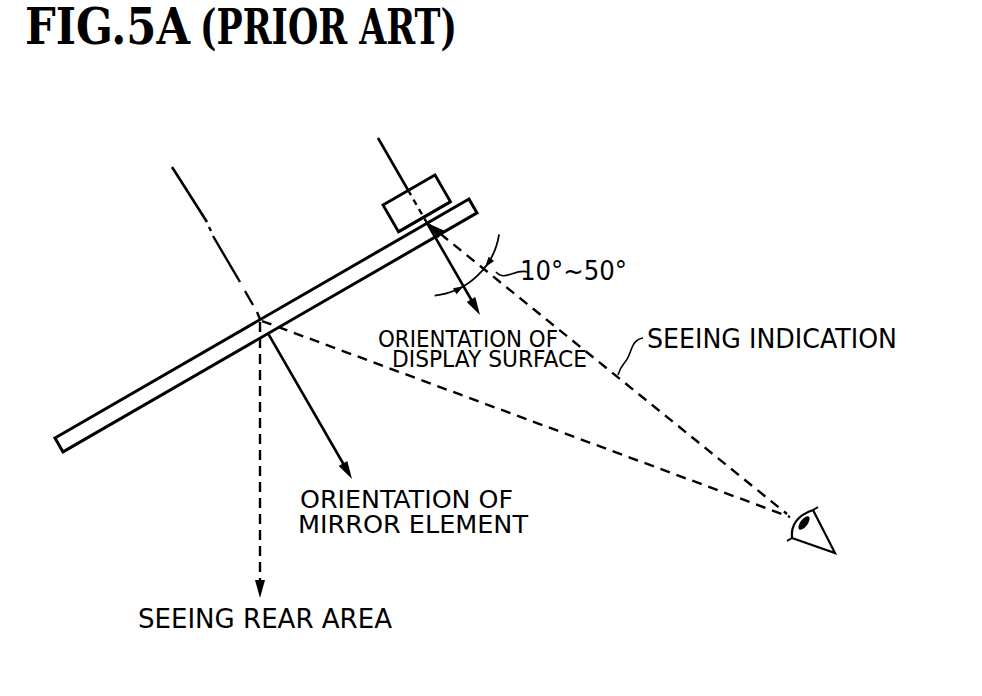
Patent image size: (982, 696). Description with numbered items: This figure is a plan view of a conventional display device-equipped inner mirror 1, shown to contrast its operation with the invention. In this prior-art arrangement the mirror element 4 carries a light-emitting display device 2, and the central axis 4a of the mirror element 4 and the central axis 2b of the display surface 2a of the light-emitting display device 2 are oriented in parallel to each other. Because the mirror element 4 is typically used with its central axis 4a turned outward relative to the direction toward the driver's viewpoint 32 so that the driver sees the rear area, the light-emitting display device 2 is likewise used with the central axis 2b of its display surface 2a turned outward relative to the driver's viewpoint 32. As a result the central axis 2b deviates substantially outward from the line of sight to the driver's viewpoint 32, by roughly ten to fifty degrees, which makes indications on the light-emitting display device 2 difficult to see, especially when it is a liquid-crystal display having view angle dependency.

The conventional display device-equipped inner mirror 1 is at (523, 104).
The light-emitting display device 2 is at (444, 190).
The display surface 2a is at (409, 235).
The central axis of display surface 2b is at (392, 160).
The mirror element 4 is at (130, 411).
The central axis of mirror element 4a is at (188, 192).
The driver's viewpoint 32 is at (800, 508).